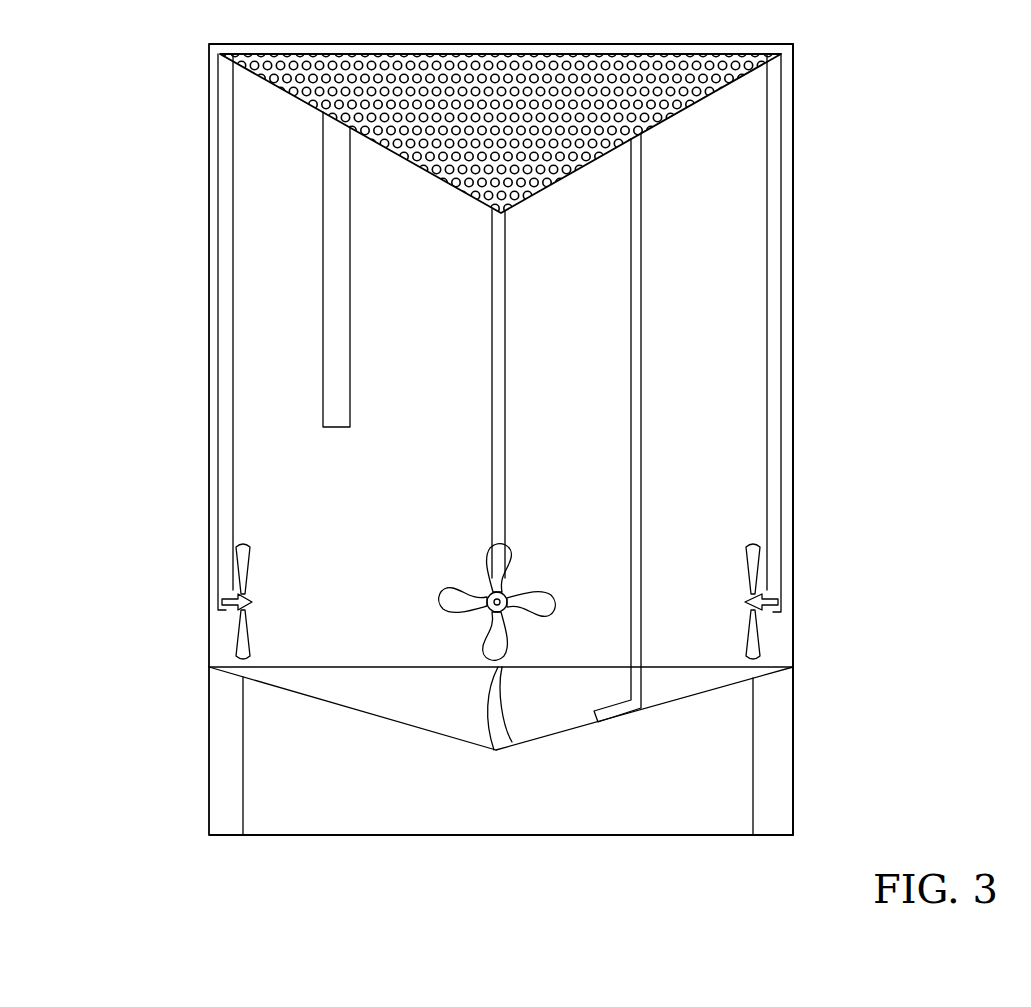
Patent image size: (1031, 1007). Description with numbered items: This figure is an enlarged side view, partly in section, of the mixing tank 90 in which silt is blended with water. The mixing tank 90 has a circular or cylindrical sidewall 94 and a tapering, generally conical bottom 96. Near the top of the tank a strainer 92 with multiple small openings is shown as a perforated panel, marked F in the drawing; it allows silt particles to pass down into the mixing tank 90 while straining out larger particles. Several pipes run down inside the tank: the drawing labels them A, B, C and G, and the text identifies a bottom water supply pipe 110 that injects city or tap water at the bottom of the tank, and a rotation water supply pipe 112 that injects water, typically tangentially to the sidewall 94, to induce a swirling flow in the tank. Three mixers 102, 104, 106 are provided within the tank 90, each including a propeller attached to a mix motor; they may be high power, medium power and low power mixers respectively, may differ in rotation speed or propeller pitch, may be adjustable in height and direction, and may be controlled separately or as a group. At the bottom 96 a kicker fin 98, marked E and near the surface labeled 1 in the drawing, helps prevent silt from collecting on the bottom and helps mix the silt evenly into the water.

The mixing tank 90 is at (793, 291).
The strainer 92 is at (565, 112).
The sidewall 94 is at (793, 382).
The bottom 96 is at (560, 751).
The kicker fin 98 is at (506, 780).
The mixer 102 is at (226, 598).
The mixer 104 is at (497, 568).
The mixer 106 is at (774, 594).
The bottom water supply pipe 110 is at (640, 497).
The rotation water supply pipe 112 is at (242, 275).
The hopper surface 1 is at (370, 700).
The channel A is at (223, 492).
The channel B is at (497, 450).
The channel C is at (771, 428).
The flap E is at (505, 720).
The filter F is at (716, 72).
The channel G is at (361, 269).